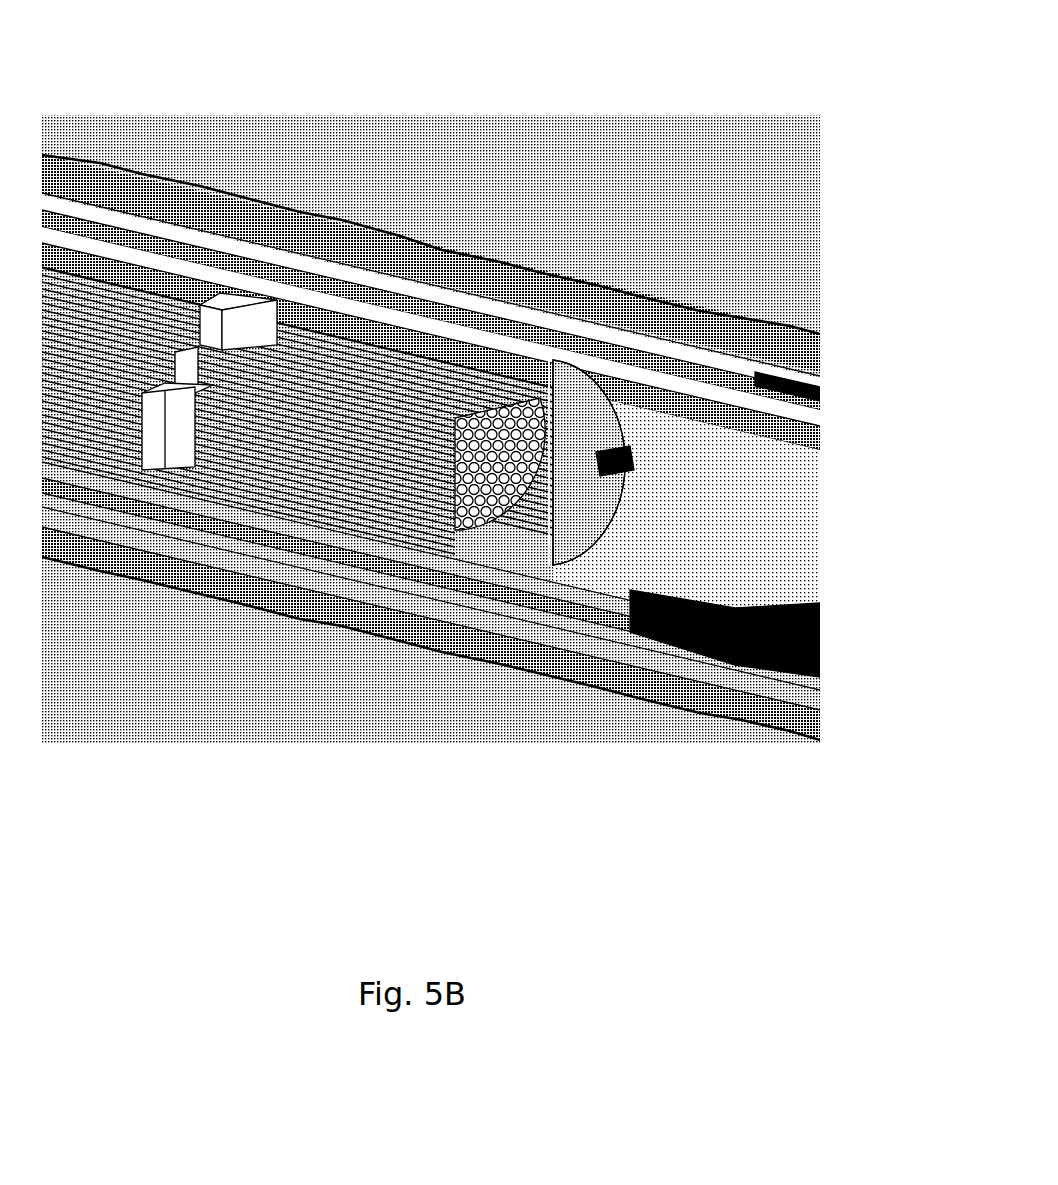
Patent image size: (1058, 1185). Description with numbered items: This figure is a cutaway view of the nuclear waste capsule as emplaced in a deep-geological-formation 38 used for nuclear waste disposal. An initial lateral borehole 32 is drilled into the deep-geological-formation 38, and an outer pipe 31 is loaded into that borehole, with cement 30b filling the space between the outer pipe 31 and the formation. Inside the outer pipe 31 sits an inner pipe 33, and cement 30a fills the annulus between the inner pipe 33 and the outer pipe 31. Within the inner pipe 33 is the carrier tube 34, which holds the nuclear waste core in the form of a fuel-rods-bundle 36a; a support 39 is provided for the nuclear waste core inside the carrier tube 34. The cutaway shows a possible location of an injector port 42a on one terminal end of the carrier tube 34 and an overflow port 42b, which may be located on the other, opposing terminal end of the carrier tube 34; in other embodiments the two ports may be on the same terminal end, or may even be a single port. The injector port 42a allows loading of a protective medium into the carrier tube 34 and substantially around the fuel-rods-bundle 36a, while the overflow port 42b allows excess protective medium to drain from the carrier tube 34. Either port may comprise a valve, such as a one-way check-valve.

The cement 30a is at (244, 250).
The cement 30b is at (398, 257).
The outer pipe 31 is at (790, 368).
The initial lateral borehole 32 is at (693, 303).
The inner pipe 33 is at (825, 417).
The carrier tube 34 is at (575, 525).
The fuel-rods-bundle 36a is at (278, 427).
The deep-geological-formation 38 is at (622, 200).
The support 39 is at (181, 428).
The injector port 42a is at (630, 467).
The overflow port 42b is at (782, 665).